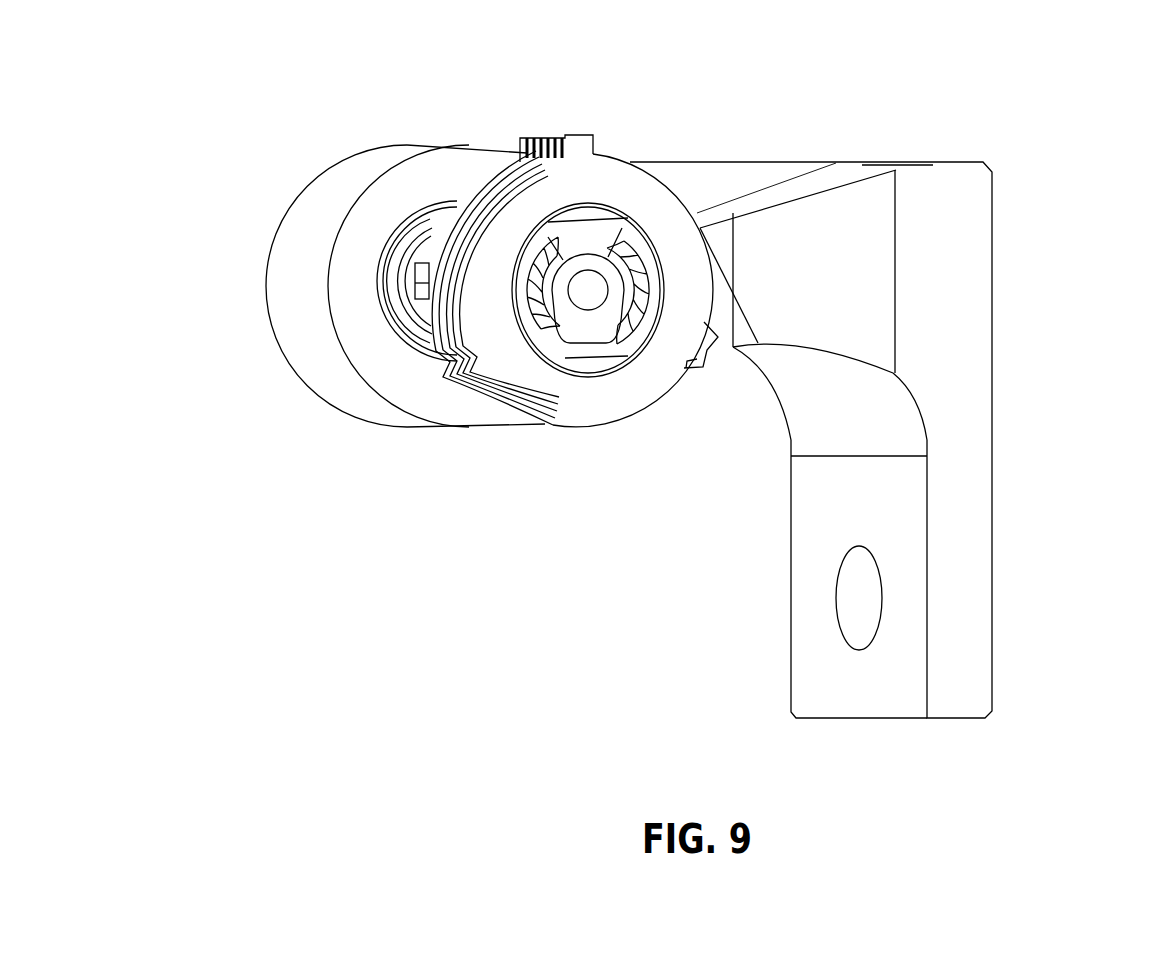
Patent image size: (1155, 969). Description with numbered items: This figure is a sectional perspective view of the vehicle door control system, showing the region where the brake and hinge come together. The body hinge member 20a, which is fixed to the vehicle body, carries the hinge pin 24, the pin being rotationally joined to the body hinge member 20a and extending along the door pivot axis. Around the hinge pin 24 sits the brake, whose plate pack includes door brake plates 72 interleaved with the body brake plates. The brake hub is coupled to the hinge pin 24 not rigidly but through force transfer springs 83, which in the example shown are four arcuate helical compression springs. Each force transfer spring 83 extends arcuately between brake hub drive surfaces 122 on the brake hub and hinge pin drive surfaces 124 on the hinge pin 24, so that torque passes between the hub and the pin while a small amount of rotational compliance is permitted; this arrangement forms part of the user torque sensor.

The door brake plates 72 is at (607, 163).
The body hinge member 20a is at (741, 177).
The brake hub drive surfaces 122 is at (515, 265).
The force transfer spring 83 is at (520, 303).
The hinge pin drive surfaces 124 is at (545, 298).
The hinge pin 24 is at (588, 343).